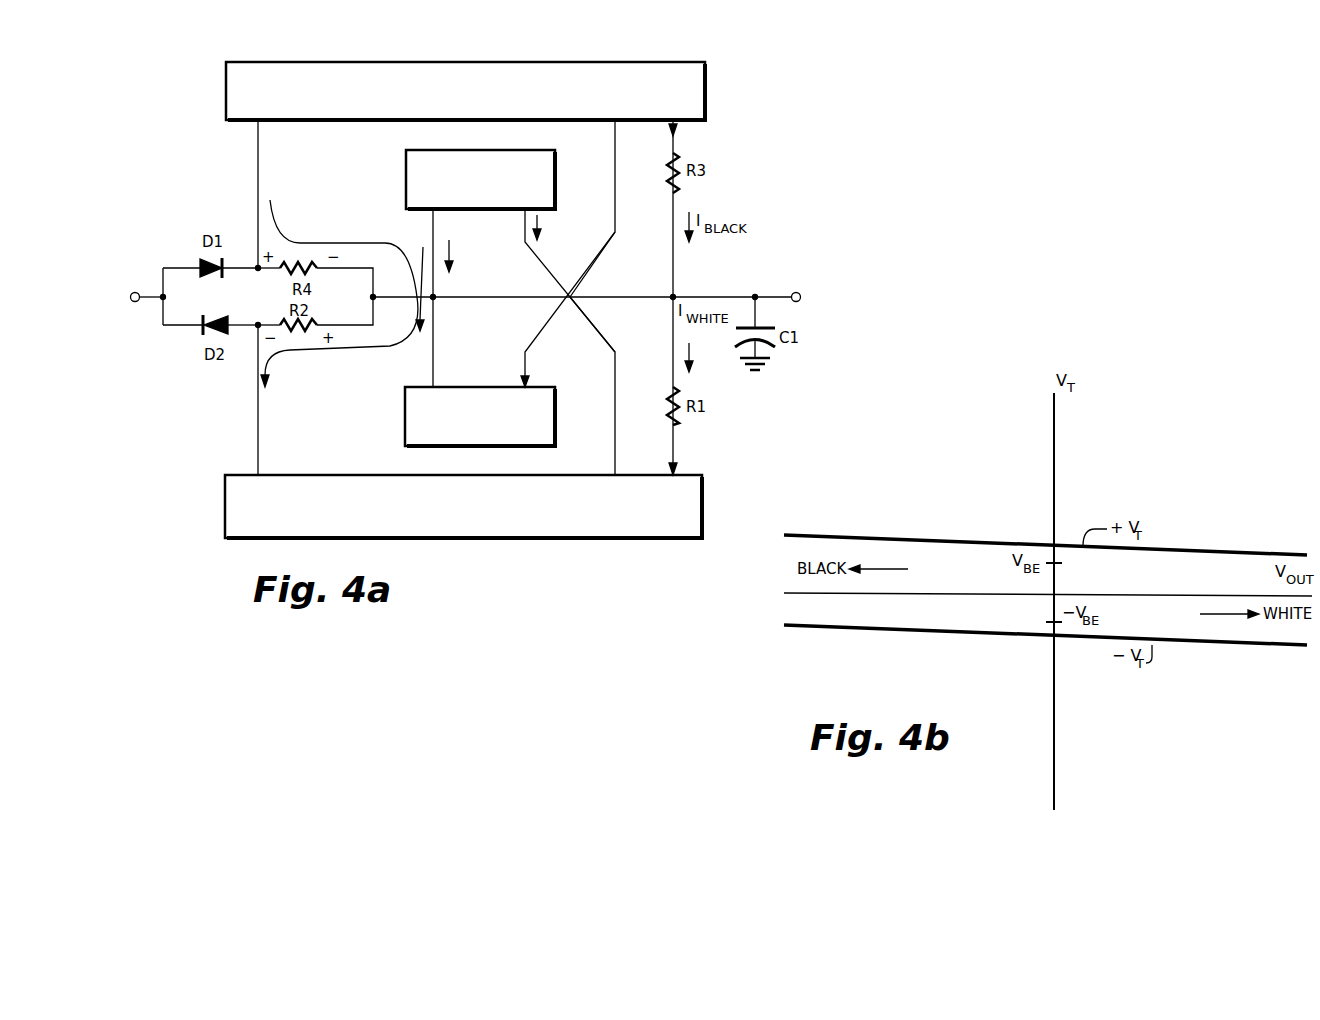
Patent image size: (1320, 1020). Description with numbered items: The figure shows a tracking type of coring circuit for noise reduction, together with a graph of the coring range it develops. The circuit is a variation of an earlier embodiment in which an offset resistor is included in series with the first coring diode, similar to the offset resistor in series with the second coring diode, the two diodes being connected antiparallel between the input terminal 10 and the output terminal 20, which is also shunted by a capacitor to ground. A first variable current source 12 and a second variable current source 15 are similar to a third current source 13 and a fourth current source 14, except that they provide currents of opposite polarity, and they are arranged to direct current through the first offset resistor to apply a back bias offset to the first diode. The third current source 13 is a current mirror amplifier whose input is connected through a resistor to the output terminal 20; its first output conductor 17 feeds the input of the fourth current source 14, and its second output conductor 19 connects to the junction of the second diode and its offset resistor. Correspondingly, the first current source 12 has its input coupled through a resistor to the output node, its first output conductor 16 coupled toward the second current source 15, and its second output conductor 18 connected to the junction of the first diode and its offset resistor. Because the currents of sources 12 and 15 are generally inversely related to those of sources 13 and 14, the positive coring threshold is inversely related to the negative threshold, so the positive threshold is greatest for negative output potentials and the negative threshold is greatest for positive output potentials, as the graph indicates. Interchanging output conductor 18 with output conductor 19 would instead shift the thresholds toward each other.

The input terminal 10 is at (134, 292).
The current mirror amplifier CMA5 12 is at (706, 98).
The current mirror amplifier CMA1 13 is at (225, 482).
The current mirror amplifier CMA2 14 is at (406, 169).
The current mirror amplifier CMA6 15 is at (405, 427).
The output conductor OUT1 of CMA5 16 is at (621, 168).
The output conductor OUT1 of CMA1 17 is at (615, 444).
The output conductor OUT2 of CMA5 18 is at (264, 168).
The output conductor OUT2 of CMA1 19 is at (264, 446).
The output terminal 20 is at (799, 292).